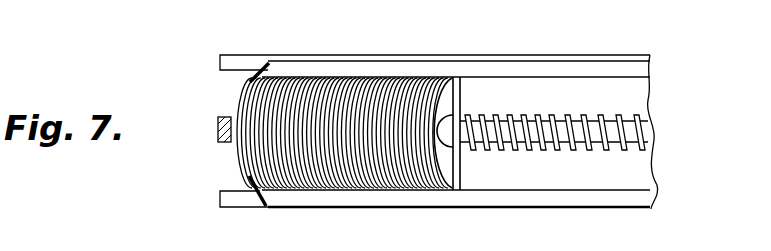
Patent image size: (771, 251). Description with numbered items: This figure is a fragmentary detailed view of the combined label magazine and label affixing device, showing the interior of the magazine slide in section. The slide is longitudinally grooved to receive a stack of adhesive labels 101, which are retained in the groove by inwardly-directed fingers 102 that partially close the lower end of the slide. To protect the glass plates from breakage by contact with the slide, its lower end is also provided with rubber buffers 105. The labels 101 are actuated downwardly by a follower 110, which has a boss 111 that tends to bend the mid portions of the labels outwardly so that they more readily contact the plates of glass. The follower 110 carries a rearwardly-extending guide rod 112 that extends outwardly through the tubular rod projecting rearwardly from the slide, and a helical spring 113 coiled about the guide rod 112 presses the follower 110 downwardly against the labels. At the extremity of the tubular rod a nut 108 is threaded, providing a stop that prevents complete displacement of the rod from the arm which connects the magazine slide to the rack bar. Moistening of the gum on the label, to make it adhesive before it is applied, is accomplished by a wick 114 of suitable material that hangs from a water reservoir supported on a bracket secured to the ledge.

The adhesive labels 101 is at (368, 173).
The inwardly-directed fingers 102 is at (258, 77).
The rubber buffers 105 is at (236, 202).
The nut 108 is at (238, 62).
The follower 110 is at (461, 99).
The boss 111 is at (440, 150).
The guide rod 112 is at (642, 130).
The helical spring 113 is at (608, 150).
The wick 114 is at (218, 142).